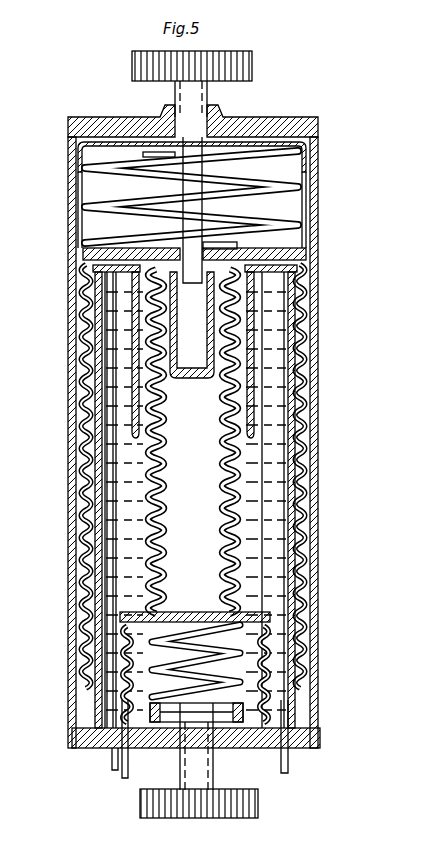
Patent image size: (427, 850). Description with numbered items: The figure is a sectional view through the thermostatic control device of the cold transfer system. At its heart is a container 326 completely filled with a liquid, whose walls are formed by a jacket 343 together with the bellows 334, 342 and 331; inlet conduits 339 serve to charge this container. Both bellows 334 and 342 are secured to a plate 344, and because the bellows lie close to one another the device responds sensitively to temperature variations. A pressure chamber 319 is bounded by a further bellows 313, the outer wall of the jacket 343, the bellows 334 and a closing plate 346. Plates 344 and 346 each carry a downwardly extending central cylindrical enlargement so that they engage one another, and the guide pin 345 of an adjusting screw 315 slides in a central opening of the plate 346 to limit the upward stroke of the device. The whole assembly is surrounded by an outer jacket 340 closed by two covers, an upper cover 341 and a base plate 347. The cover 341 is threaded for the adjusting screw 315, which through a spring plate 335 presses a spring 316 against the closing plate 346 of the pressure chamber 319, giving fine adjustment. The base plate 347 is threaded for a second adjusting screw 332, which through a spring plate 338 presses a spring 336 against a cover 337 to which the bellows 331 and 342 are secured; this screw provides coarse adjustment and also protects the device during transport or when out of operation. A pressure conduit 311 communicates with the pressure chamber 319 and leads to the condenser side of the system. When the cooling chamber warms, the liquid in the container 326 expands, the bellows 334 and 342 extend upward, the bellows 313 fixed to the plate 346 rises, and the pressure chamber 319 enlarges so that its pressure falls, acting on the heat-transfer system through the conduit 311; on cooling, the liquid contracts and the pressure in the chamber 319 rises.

The adjusting screw 315 is at (253, 56).
The cover 341 is at (277, 123).
The spring plate 335 is at (312, 148).
The spring 316 is at (300, 190).
The guide pin 345 is at (210, 210).
The closing plate 346 is at (304, 256).
The jacket 340 is at (70, 245).
The plate 344 is at (130, 286).
The pressure chamber 319 is at (243, 300).
The bellows 334 is at (172, 350).
The bellows 313 is at (313, 411).
The container 326 is at (128, 440).
The jacket 343 is at (300, 470).
The pressure conduit 311 is at (112, 481).
The bellows 342 is at (225, 546).
The cover 337 is at (200, 611).
The spring 336 is at (236, 673).
The bellows 331 is at (120, 672).
The inlet conduits 339 is at (129, 764).
The spring plate 338 is at (234, 722).
The base plate 347 is at (306, 748).
The adjusting screw 332 is at (152, 800).